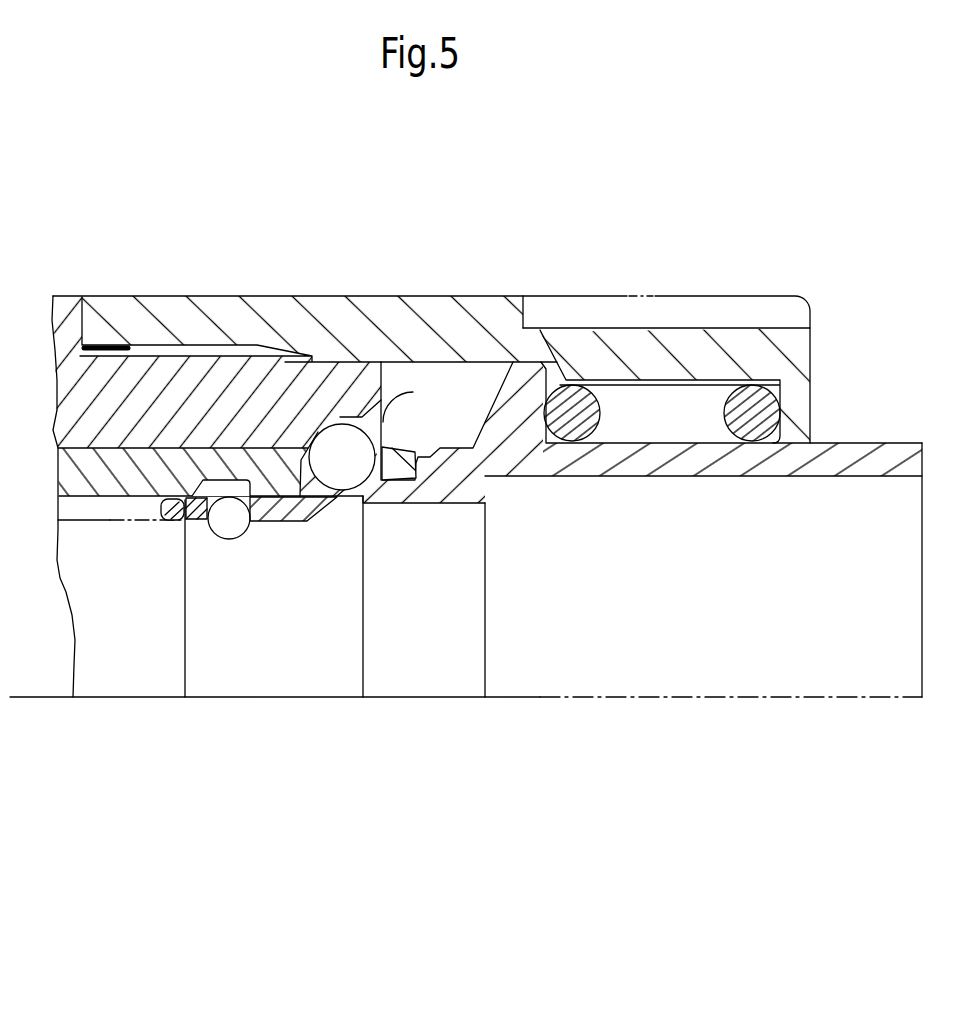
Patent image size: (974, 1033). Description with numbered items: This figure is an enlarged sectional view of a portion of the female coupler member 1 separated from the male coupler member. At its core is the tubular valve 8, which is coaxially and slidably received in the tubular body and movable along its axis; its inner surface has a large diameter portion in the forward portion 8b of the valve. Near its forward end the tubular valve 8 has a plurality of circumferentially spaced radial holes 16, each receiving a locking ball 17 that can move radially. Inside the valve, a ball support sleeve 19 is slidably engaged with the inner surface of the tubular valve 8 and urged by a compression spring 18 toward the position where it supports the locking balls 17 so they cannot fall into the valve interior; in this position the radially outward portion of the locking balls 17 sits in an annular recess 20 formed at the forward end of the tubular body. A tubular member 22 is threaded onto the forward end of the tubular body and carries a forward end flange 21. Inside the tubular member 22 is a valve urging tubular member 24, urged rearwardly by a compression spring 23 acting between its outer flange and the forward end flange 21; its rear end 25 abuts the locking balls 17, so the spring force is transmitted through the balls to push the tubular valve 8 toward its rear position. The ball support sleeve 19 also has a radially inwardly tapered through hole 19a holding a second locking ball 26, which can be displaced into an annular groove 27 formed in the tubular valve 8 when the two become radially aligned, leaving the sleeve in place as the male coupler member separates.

The female coupler member 1 is at (466, 428).
The tubular valve 8 is at (217, 326).
The forward portion of the valve 8b is at (271, 345).
The radial holes 16 is at (335, 639).
The locking ball 17 is at (342, 357).
The compression spring 18 is at (145, 648).
The ball support sleeve 19 is at (279, 647).
The radial through hole 19a is at (166, 692).
The annular recess 20 is at (402, 328).
The forward end flange 21 is at (735, 385).
The tubular member 22 is at (318, 250).
The compression spring 23 is at (664, 319).
The valve urging tubular member 24 is at (611, 365).
The rear end 25 is at (406, 614).
The second locking ball 26 is at (207, 664).
The annular groove 27 is at (241, 359).